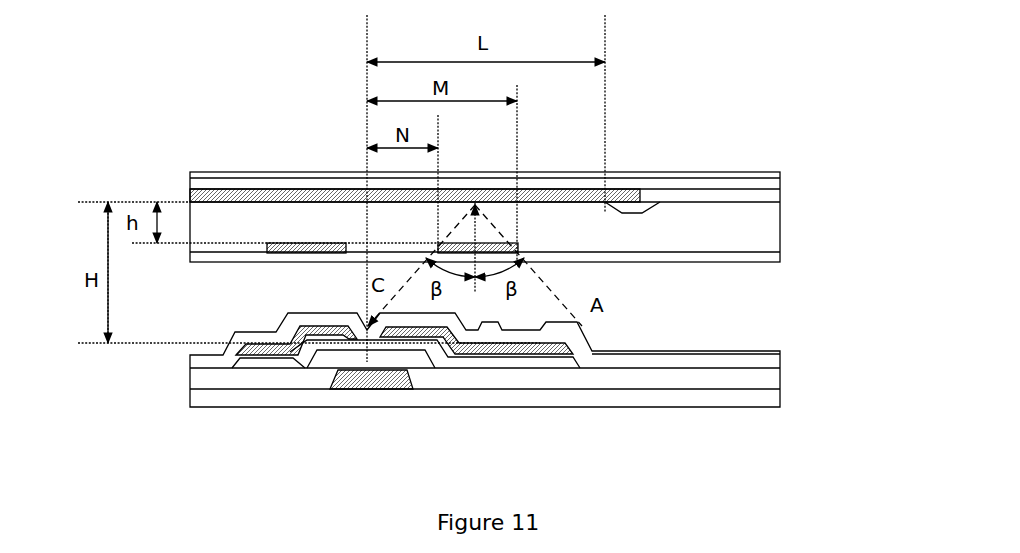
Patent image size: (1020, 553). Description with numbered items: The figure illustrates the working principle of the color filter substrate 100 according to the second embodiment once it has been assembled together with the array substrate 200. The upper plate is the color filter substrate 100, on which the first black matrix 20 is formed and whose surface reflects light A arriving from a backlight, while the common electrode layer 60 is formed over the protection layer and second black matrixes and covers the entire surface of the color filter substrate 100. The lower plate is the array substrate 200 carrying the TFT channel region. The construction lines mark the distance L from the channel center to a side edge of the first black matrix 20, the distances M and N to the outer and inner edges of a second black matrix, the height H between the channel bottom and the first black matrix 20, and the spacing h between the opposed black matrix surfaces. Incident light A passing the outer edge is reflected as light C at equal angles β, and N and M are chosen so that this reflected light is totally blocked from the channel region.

The color filter substrate 100 is at (692, 170).
The array substrate 200 is at (770, 453).
The first black matrix 20 is at (364, 194).
The common electrode layer 60 is at (317, 248).